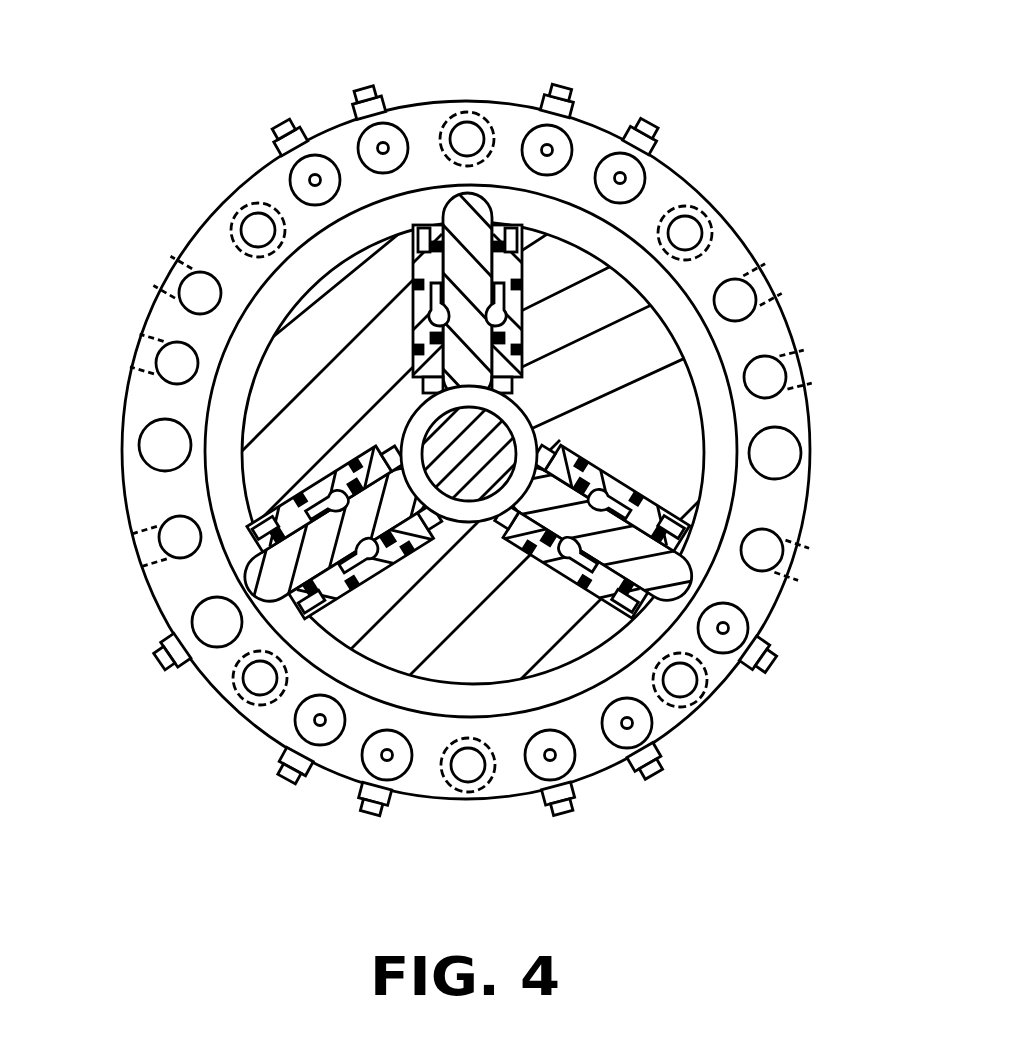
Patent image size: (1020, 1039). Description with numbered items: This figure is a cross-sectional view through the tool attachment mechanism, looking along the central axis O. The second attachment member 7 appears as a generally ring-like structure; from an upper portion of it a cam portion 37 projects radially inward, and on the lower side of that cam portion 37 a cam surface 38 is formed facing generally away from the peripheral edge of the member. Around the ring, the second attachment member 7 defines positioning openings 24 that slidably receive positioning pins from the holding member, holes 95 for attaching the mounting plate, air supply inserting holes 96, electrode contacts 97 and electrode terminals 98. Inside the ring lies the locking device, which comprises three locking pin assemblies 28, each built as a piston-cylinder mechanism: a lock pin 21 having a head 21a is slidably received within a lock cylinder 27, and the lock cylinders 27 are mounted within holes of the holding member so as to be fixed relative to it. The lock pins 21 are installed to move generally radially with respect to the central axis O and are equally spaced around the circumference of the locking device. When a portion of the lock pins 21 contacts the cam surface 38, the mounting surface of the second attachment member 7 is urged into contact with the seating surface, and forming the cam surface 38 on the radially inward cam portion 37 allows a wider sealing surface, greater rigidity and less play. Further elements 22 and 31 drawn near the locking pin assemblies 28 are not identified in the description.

The second attachment member 7 is at (760, 232).
The lock pin 21 is at (477, 275).
The head 21a is at (397, 450).
The housing 22 is at (693, 288).
The positioning openings 24 is at (165, 445).
The lock cylinder 27 is at (517, 308).
The locking pin assemblies 28 is at (413, 277).
The seal spring 31 is at (413, 310).
The cam portion 37 is at (705, 358).
The cam surface 38 is at (415, 200).
The holes 95 is at (467, 139).
The air supply inserting holes 96 is at (200, 293).
The electrode contacts 97 is at (313, 180).
The electrode terminals 98 is at (290, 122).
The central axis O is at (470, 452).